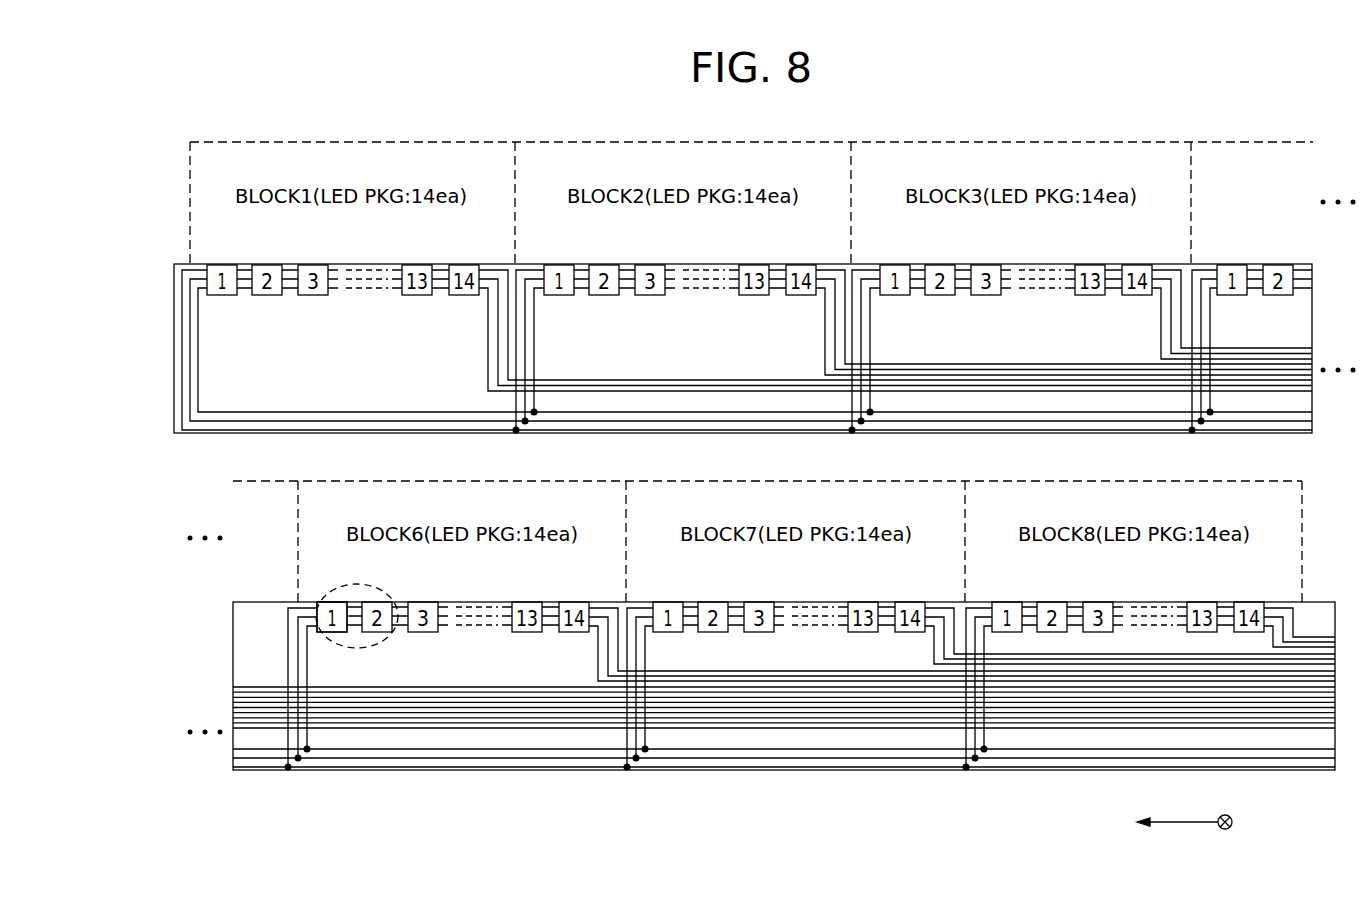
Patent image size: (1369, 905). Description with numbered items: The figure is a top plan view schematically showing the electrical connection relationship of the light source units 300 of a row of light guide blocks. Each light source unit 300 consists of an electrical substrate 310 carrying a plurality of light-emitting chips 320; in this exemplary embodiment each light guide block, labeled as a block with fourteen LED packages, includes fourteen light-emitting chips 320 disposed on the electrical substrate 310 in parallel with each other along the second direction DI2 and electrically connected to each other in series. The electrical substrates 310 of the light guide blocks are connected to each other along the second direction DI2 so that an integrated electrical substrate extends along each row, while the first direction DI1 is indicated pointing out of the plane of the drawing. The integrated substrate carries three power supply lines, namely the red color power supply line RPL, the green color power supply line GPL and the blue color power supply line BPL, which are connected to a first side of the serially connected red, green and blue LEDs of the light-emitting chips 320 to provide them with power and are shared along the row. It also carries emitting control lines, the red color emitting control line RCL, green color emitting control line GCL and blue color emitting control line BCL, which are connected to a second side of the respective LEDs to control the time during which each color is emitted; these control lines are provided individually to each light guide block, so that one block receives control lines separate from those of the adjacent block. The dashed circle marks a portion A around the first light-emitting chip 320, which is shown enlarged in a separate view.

The light source unit 300 is at (168, 570).
The electrical substrate 310 is at (307, 627).
The light-emitting chip 320 is at (333, 605).
The portion A is at (355, 583).
The red color power supply line RPL is at (182, 332).
The green color power supply line GPL is at (190, 358).
The blue color power supply line BPL is at (198, 383).
The red color emitting control line RCL is at (603, 380).
The green color emitting control line GCL is at (648, 386).
The blue color emitting control line BCL is at (693, 391).
The first direction DI1 is at (1222, 808).
The second direction DI2 is at (1157, 821).